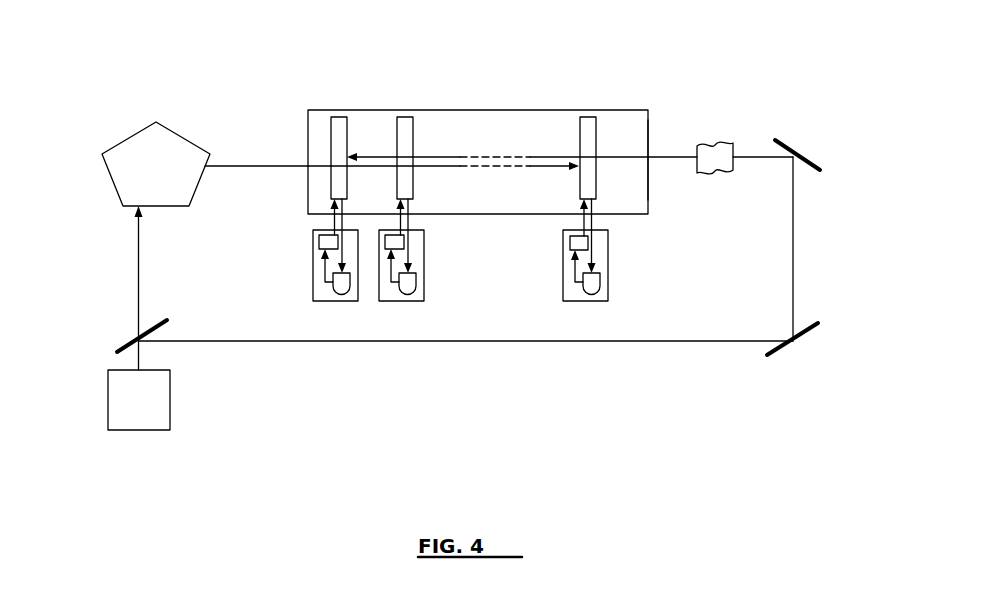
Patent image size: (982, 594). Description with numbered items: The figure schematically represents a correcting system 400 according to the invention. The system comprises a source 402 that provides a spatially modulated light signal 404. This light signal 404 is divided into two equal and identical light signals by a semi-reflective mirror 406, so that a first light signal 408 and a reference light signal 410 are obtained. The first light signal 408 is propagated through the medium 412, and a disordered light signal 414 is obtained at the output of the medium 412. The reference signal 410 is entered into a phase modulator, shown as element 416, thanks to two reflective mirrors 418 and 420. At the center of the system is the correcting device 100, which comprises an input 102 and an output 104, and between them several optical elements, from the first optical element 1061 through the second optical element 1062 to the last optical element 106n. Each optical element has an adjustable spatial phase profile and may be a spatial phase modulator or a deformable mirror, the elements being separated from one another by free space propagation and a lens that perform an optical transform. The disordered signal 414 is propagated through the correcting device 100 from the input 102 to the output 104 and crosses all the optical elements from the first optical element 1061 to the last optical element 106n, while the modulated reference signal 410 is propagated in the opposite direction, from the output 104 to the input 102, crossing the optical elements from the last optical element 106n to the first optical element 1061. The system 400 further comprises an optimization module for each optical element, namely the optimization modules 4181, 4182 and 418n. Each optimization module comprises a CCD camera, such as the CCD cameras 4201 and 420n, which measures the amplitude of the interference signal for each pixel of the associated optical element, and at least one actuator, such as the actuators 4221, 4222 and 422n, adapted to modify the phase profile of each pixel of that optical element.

The correcting system 400 is at (610, 381).
The source 402 is at (170, 418).
The spatially modulated light signal 404 is at (140, 353).
The semi-reflective mirror 406 is at (133, 342).
The first light signal 408 is at (138, 248).
The reference light signal 410 is at (680, 157).
The medium 412 is at (126, 140).
The disordered light signal 414 is at (268, 166).
The optical element 416 is at (723, 142).
The reflective mirror 418 is at (813, 327).
The reflective mirror 420 is at (785, 140).
The correcting device 100 is at (359, 110).
The input 102 is at (302, 156).
The output 104 is at (652, 142).
The first optical element 1061 is at (342, 117).
The second optical element 1062 is at (408, 117).
The last optical element 106n is at (588, 117).
The optimization module 4181 is at (332, 301).
The optimization module 4182 is at (392, 301).
The optimization module 418n is at (590, 300).
The CCD camera 4201 is at (333, 287).
The CCD camera 420n is at (600, 278).
The actuator 4221 is at (319, 240).
The actuator 4222 is at (404, 243).
The actuator 422n is at (416, 278).